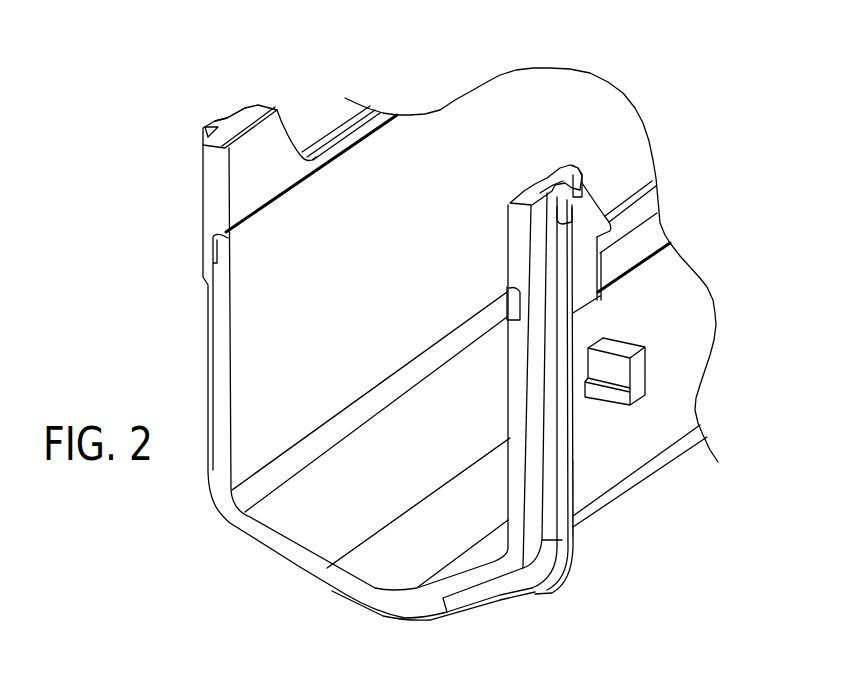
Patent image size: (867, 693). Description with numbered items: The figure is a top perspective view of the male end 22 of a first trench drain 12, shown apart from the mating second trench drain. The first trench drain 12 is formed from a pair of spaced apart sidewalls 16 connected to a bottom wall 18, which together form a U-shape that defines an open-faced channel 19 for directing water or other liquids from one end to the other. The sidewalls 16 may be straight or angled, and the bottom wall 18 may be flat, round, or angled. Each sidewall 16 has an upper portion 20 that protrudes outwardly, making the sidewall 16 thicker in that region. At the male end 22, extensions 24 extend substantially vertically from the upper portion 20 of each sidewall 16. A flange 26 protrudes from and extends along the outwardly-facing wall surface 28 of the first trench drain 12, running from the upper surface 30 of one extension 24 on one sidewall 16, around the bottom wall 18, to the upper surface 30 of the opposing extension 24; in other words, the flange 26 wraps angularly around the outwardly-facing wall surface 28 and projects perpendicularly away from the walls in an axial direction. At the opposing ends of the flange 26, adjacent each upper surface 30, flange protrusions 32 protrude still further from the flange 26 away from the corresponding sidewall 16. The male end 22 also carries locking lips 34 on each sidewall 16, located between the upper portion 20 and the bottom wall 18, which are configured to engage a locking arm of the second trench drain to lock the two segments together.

The first trench drain 12 is at (197, 110).
The sidewalls 16 is at (494, 271).
The bottom wall 18 is at (345, 522).
The open-faced channel 19 is at (388, 440).
The upper portion 20 is at (650, 238).
The male end 22 is at (458, 635).
The extensions 24 is at (282, 118).
The flange 26 is at (573, 487).
The outwardly-facing wall surface 28 is at (667, 425).
The upper surface 30 is at (241, 127).
The flange protrusions 32 is at (201, 124).
The locking lips 34 is at (638, 338).